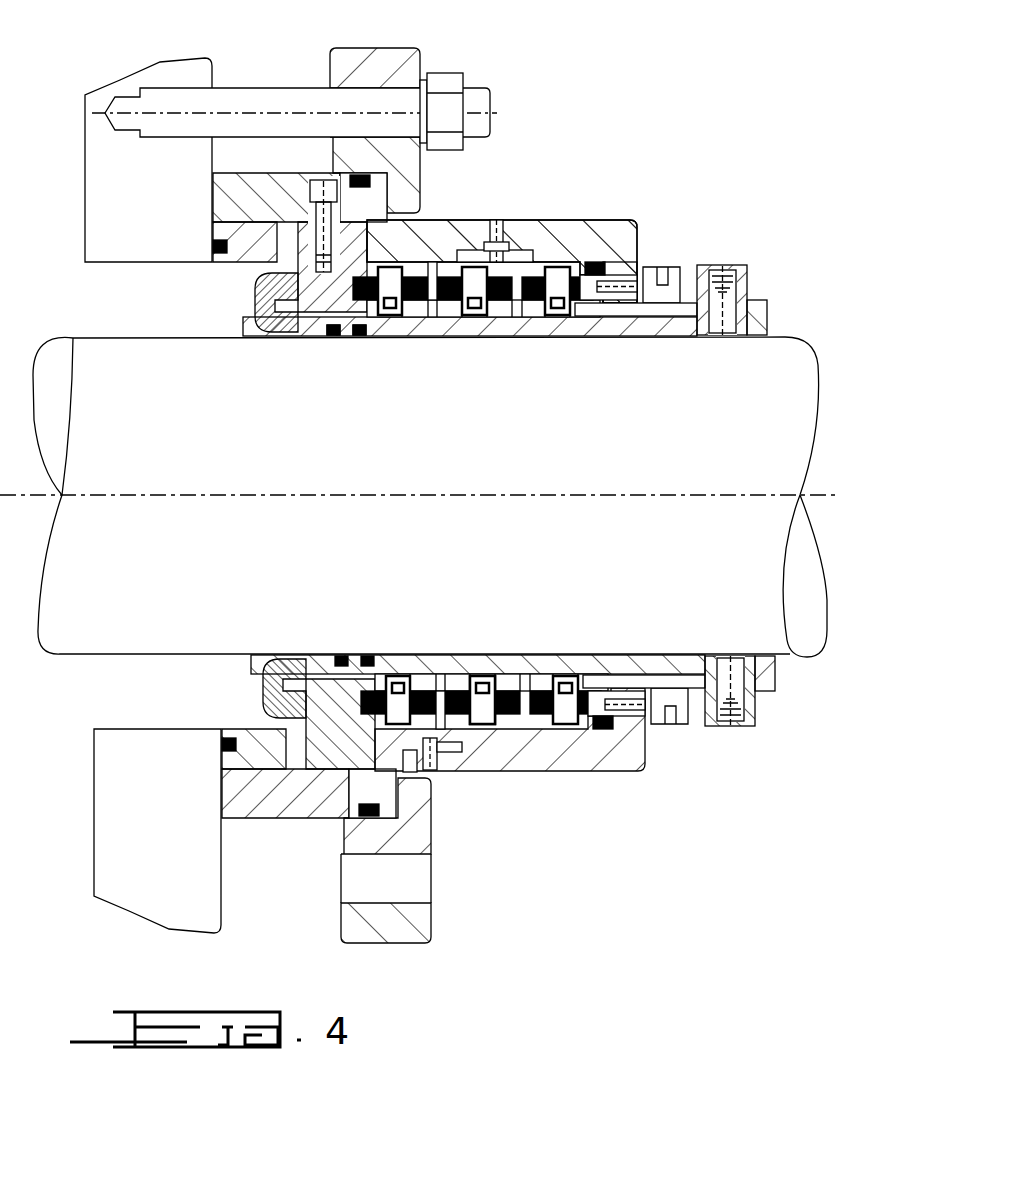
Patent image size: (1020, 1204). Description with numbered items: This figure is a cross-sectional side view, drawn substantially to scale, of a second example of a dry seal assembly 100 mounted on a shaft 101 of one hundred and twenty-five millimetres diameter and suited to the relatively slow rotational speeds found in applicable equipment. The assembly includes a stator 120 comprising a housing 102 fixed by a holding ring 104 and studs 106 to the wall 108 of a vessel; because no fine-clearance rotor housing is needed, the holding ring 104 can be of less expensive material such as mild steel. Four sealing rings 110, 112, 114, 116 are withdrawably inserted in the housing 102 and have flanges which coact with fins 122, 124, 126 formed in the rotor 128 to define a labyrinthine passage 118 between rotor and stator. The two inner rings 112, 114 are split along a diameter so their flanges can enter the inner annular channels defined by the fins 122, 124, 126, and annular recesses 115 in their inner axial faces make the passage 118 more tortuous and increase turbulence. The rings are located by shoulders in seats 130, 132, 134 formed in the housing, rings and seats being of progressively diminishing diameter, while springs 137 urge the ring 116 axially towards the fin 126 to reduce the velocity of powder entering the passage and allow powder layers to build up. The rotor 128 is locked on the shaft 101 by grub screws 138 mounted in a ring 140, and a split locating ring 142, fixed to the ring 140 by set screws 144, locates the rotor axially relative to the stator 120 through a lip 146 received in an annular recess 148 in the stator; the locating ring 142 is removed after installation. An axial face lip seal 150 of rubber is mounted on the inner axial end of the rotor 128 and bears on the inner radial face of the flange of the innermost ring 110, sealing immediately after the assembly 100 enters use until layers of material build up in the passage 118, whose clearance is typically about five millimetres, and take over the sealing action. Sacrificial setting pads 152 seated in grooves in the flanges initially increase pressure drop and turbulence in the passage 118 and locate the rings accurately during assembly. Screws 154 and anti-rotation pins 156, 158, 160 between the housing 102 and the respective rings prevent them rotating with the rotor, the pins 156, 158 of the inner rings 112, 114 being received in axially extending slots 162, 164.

The dry seal assembly 100 is at (657, 123).
The shaft 101 is at (97, 650).
The housing 102 is at (607, 227).
The holding ring 104 is at (385, 62).
The studs 106 is at (470, 95).
The wall 108 is at (188, 64).
The sealing ring 110 is at (265, 233).
The sealing ring 112 is at (440, 715).
The sealing ring 114 is at (523, 258).
The annular recesses 115 is at (523, 680).
The sealing ring 116 is at (628, 265).
The labyrinthine passage 118 is at (430, 317).
The stator 120 is at (610, 268).
The fin 122 is at (335, 306).
The fin 124 is at (475, 302).
The fin 126 is at (563, 304).
The rotor 128 is at (607, 323).
The seat 130 is at (280, 230).
The seat 132 is at (410, 772).
The seat 134 is at (497, 218).
The springs 137 is at (623, 697).
The grub screws 138 is at (720, 334).
The ring 140 is at (740, 267).
The split locating ring 142 is at (697, 743).
The set screws 144 is at (738, 760).
The lip 146 is at (665, 700).
The annular recess 148 is at (663, 268).
The axial face lip seal 150 is at (260, 335).
The setting pads 152 is at (330, 315).
The screws 154 is at (322, 180).
The anti-rotation pin 156 is at (432, 742).
The anti-rotation pin 158 is at (507, 240).
The anti-rotation pin 160 is at (660, 270).
The axially extending slot 162 is at (452, 748).
The axially extending slot 164 is at (530, 252).